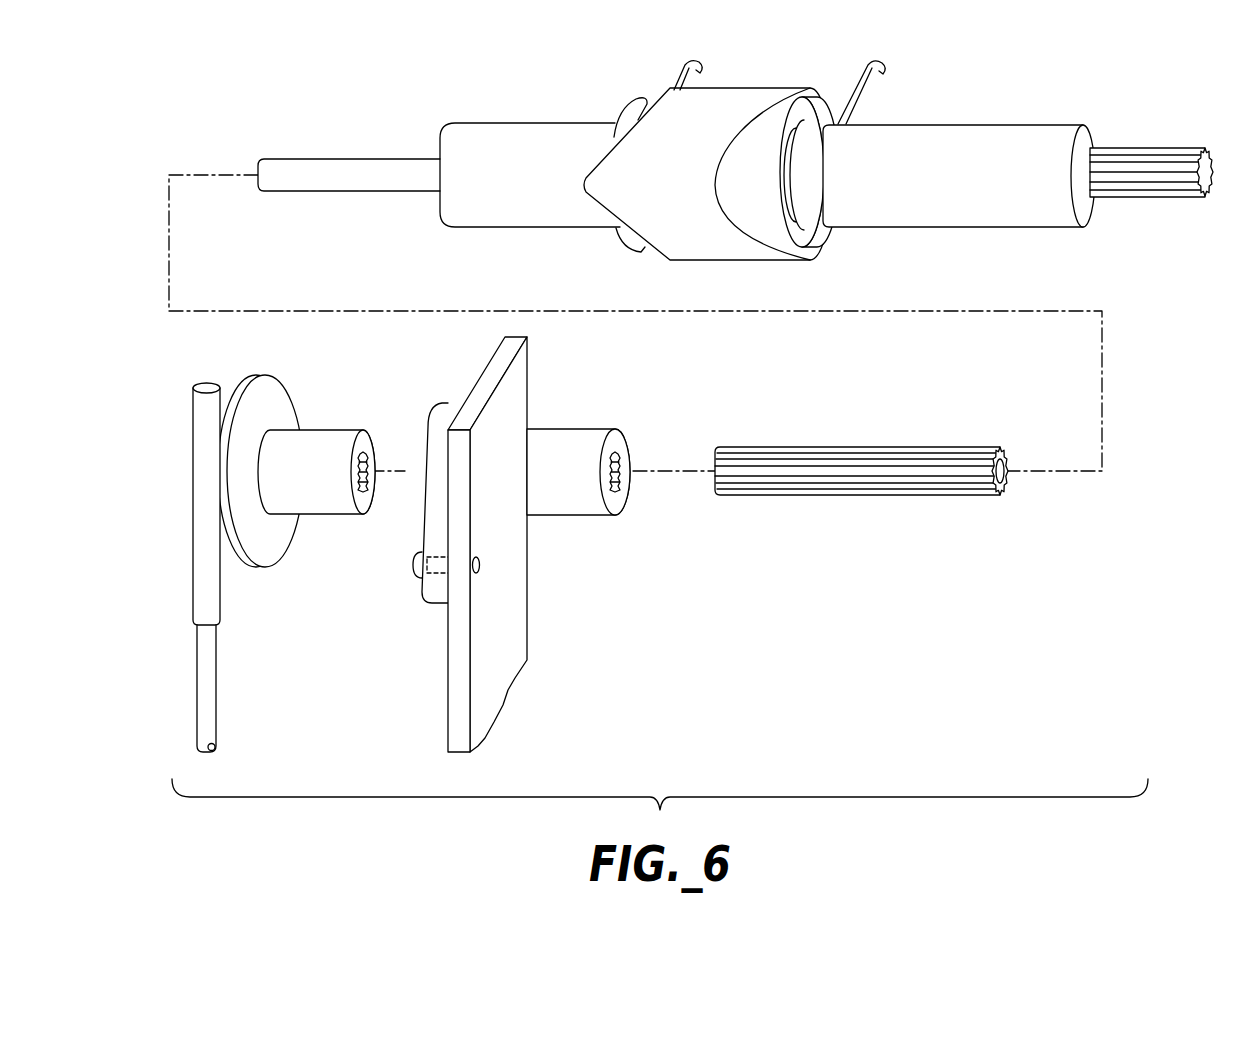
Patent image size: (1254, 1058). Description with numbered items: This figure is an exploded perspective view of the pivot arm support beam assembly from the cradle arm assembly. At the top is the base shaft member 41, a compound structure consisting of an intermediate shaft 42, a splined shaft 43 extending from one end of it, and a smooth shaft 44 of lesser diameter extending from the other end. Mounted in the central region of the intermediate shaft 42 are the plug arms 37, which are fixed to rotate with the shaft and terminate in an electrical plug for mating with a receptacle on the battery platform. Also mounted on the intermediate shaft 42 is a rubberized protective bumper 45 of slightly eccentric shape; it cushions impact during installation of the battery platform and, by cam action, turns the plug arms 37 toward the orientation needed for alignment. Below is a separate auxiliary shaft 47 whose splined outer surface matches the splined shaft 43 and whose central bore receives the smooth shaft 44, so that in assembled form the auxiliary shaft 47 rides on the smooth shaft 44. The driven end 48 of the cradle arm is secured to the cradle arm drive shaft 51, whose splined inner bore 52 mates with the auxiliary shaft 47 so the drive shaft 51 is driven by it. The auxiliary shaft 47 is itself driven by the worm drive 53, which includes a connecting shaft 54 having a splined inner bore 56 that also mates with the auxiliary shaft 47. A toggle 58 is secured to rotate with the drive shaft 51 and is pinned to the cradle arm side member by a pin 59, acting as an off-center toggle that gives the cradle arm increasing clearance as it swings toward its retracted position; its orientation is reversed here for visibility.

The plug arm 37 is at (692, 62).
The base shaft member 41 is at (735, 162).
The intermediate shaft 42 is at (530, 122).
The splined shaft 43 is at (1145, 146).
The smooth shaft 44 is at (352, 158).
The protective bumper 45 is at (748, 233).
The auxiliary shaft 47 is at (827, 447).
The driven end 48 is at (442, 667).
The cradle arm drive shaft 51 is at (567, 429).
The splined inner bore 52 is at (620, 490).
The worm drive 53 is at (284, 548).
The connecting shaft 54 is at (315, 430).
The splined inner bore 56 is at (366, 492).
The toggle 58 is at (418, 538).
The pin 59 is at (438, 573).